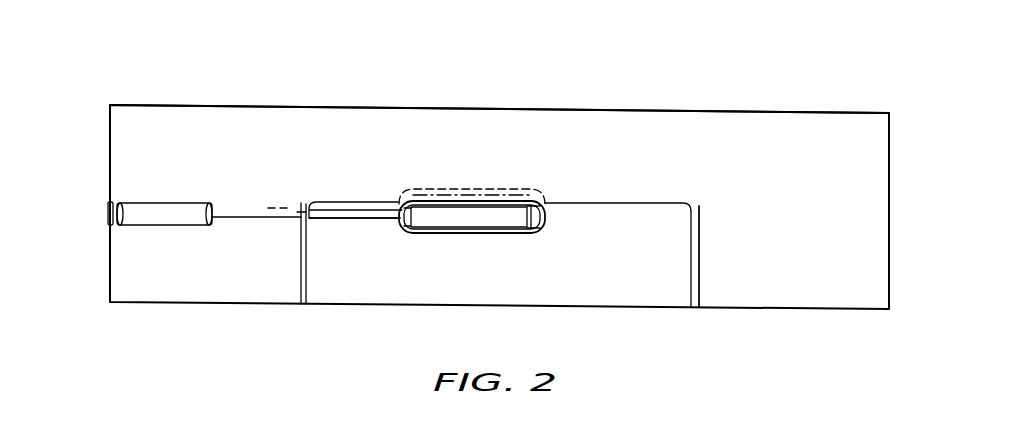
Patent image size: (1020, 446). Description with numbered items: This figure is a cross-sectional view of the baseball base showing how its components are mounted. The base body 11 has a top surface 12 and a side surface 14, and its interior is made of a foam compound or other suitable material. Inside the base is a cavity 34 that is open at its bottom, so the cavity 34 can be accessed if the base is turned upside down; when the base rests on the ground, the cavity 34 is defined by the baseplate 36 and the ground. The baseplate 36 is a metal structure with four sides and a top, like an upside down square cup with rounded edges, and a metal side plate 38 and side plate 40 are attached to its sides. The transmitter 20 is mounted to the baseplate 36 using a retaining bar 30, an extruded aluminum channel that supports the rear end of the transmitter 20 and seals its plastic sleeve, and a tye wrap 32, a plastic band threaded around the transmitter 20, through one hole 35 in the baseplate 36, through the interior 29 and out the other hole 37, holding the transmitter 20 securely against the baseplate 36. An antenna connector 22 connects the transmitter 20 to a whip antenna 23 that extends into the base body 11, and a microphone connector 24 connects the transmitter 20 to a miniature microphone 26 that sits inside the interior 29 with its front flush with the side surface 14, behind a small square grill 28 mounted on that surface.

The base body 11 is at (868, 312).
The top surface 12 is at (488, 110).
The side surface 14 is at (110, 160).
The transmitter 20 is at (505, 222).
The antenna connector 22 is at (358, 210).
The antenna 23 is at (293, 207).
The microphone connector 24 is at (347, 218).
The microphone 26 is at (173, 203).
The grill 28 is at (108, 217).
The interior 29 is at (804, 187).
The retaining bar 30 is at (529, 215).
The tye wrap 32 is at (480, 194).
The cavity 34 is at (617, 294).
The hole 35 is at (392, 192).
The baseplate 36 is at (313, 278).
The hole 37 is at (541, 192).
The side plate 38 is at (301, 247).
The side plate 40 is at (700, 241).